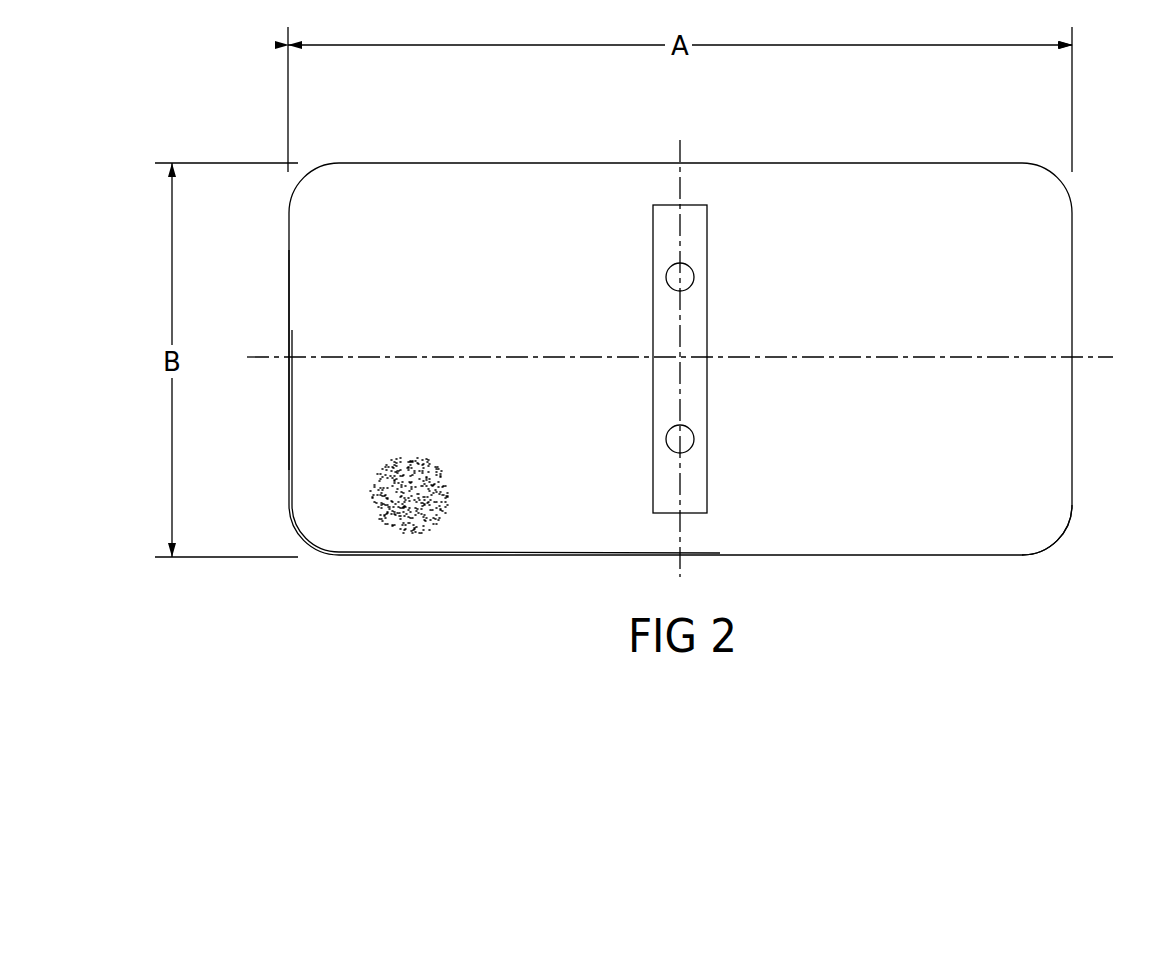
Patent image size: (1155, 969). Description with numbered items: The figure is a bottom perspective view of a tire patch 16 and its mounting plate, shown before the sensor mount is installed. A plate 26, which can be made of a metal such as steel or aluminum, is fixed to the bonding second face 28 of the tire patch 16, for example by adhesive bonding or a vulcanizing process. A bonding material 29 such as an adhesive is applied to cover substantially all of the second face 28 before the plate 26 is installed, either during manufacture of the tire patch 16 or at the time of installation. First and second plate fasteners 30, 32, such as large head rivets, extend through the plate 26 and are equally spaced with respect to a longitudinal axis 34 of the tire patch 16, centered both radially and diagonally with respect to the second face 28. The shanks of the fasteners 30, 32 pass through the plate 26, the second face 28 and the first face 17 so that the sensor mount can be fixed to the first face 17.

The tire patch 16 is at (477, 580).
The first face 17 is at (316, 550).
The plate 26 is at (694, 505).
The bonding second face 28 is at (1036, 530).
The bonding material 29 is at (399, 535).
The first plate fastener 30 is at (690, 443).
The second plate fastener 32 is at (670, 281).
The longitudinal axis 34 is at (247, 357).